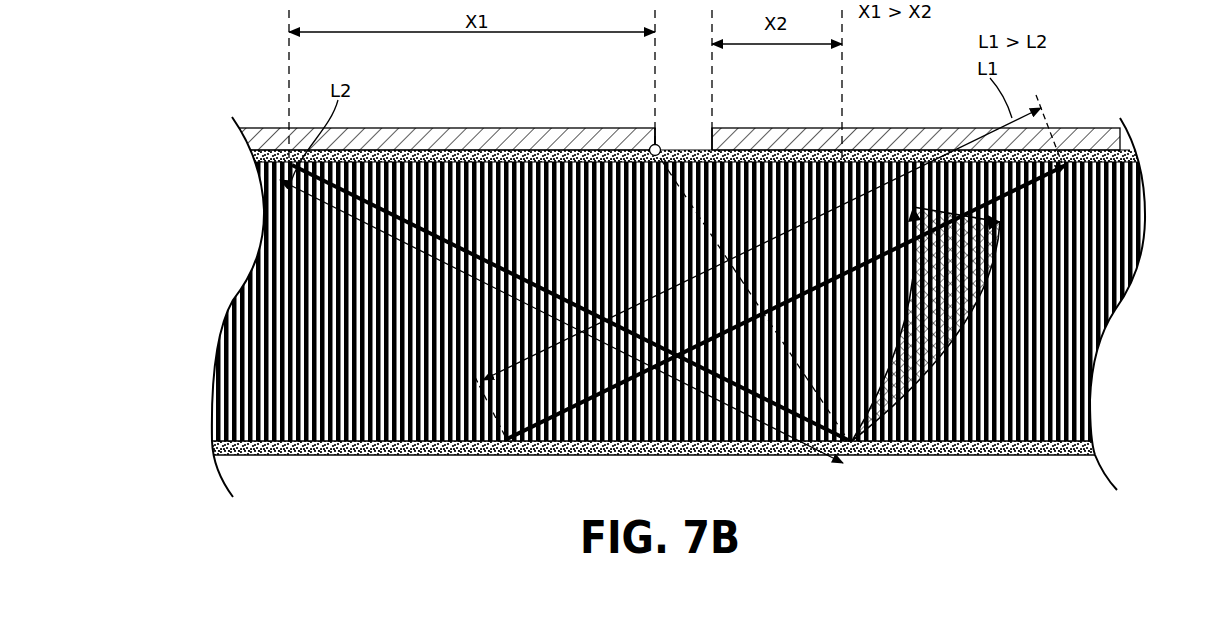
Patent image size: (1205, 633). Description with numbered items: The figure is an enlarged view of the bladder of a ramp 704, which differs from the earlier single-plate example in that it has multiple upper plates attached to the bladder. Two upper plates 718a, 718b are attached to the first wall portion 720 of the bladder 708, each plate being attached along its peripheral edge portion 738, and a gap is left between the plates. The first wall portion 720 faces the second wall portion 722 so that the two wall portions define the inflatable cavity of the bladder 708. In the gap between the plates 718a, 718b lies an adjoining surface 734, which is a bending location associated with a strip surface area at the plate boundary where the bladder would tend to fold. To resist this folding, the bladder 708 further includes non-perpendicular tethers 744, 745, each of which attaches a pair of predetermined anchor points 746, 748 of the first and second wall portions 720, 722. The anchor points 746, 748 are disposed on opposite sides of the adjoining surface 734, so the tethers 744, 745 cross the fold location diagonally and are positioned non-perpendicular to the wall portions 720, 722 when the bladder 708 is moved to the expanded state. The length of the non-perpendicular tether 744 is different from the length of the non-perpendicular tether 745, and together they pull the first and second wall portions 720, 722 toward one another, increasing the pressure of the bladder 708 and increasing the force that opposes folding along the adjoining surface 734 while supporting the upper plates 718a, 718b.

The ramp 704 is at (646, 266).
The bladder 708 is at (255, 455).
The upper plate 718a is at (455, 128).
The upper plate 718b is at (880, 128).
The first wall portion 720 is at (565, 152).
The second wall portion 722 is at (425, 455).
The adjoining surface 734 is at (665, 142).
The peripheral edge portion 738 is at (615, 128).
The non-perpendicular tether 744 is at (733, 383).
The non-perpendicular tether 745 is at (567, 413).
The anchor point 746 is at (282, 175).
The anchor point 748 is at (848, 450).